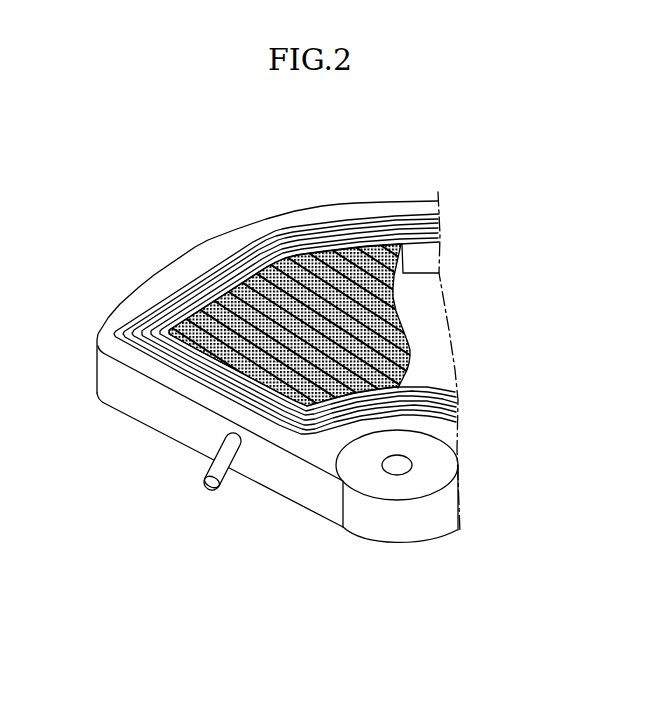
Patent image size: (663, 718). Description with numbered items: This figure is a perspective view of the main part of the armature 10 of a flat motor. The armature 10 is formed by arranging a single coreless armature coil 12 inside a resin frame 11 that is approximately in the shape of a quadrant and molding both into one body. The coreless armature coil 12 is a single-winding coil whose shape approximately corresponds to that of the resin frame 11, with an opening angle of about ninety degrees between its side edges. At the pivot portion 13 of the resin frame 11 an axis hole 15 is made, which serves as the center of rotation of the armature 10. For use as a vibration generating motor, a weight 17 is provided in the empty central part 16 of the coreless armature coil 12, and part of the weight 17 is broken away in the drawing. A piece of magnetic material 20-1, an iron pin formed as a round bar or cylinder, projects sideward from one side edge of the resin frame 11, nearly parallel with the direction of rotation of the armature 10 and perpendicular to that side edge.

The armature 10 is at (331, 371).
The resin frame 11 is at (388, 205).
The coreless armature coil 12 is at (442, 230).
The pivot portion 13 is at (425, 542).
The axis hole 15 is at (403, 465).
The empty central part 16 is at (435, 327).
The weight 17 is at (317, 267).
The piece of magnetic material 20-1 is at (205, 465).